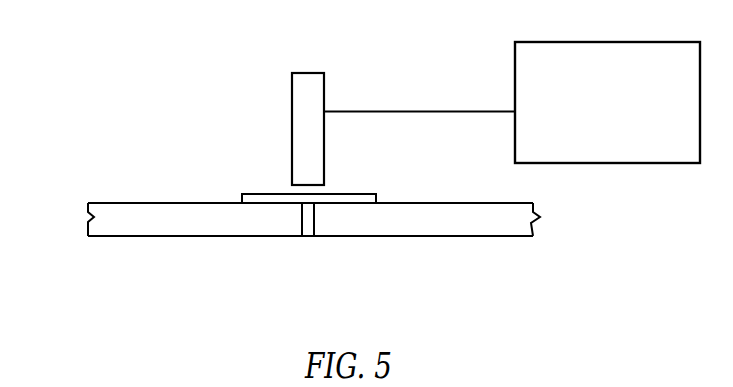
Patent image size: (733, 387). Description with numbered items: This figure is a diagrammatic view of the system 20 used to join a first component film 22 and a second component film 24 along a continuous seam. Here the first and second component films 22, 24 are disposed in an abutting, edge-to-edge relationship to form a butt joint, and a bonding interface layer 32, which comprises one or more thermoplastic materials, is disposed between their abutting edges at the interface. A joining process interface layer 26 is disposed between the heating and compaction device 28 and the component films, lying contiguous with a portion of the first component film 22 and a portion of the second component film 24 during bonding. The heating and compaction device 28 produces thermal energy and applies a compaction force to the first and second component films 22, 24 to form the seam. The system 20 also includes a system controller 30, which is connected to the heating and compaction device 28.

The system 20 is at (82, 61).
The first component film 22 is at (531, 223).
The second component film 24 is at (84, 218).
The joining process interface layer 26 is at (363, 194).
The heating and compaction device 28 is at (282, 118).
The system controller 30 is at (622, 149).
The bonding interface layer 32 is at (308, 238).